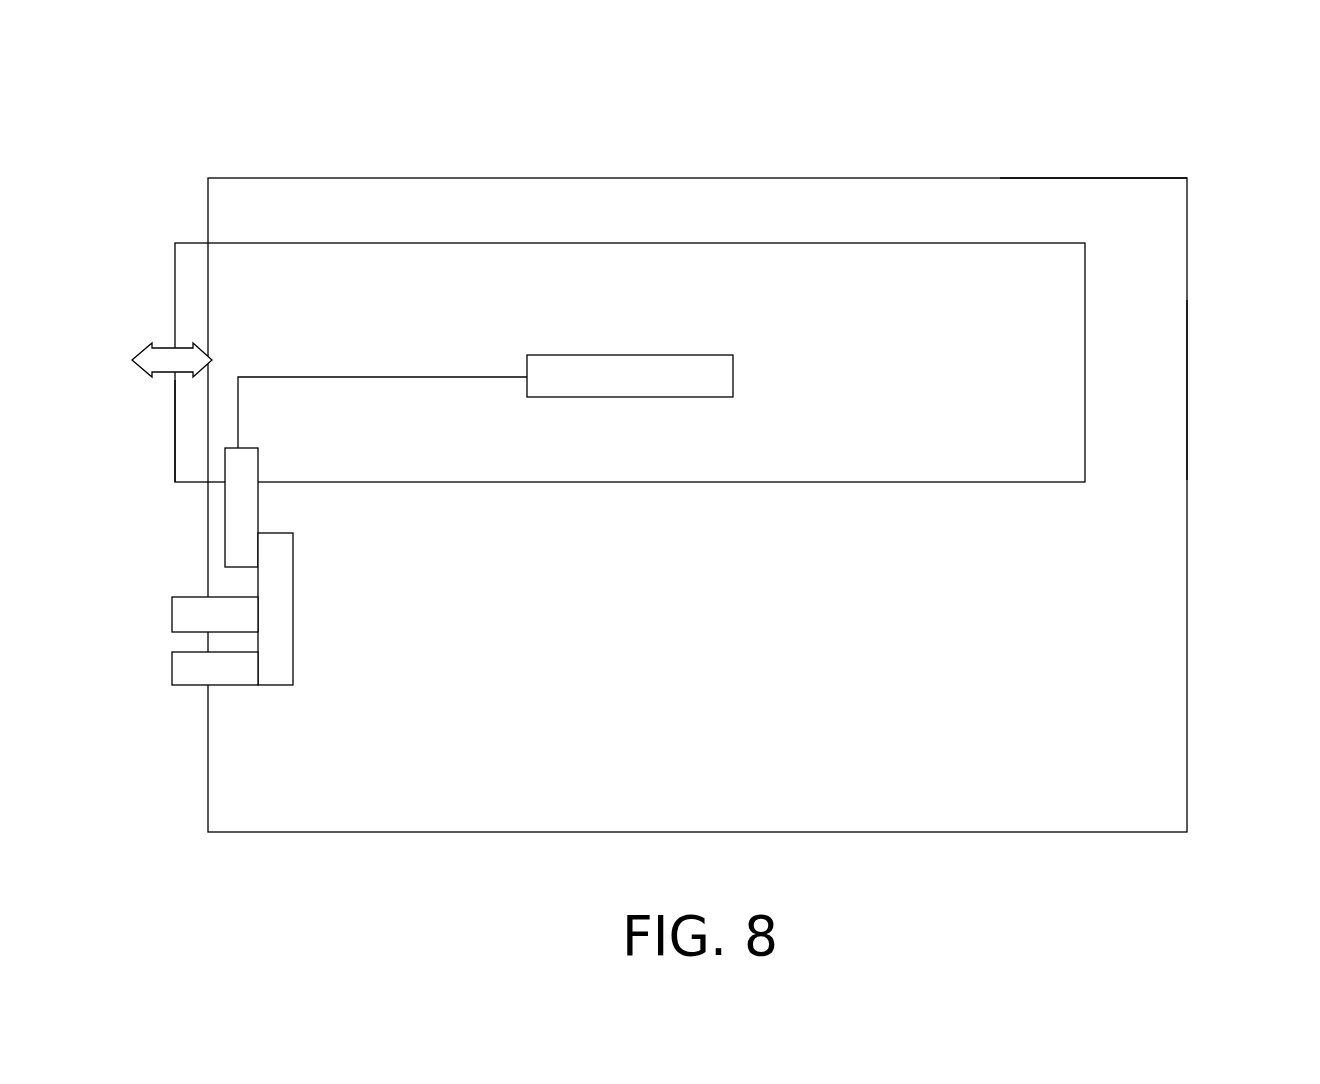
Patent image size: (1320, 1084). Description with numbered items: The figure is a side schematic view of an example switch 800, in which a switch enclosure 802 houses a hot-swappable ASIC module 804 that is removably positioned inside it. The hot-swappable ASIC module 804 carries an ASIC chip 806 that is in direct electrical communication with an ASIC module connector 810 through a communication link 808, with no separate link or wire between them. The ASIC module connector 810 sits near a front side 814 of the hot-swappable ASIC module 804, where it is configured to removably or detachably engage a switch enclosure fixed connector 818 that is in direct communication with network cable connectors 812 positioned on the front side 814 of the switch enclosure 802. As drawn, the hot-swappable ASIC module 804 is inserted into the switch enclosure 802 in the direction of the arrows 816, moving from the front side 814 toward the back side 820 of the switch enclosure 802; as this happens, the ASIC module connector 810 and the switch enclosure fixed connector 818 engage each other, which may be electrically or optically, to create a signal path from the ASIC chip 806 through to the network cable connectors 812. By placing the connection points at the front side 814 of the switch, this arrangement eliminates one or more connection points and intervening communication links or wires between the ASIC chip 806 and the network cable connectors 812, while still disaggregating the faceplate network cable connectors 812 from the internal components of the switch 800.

The switch 800 is at (1232, 106).
The switch enclosure 802 is at (1187, 268).
The hot-swappable ASIC module 804 is at (788, 482).
The ASIC chip 806 is at (635, 355).
The communication link 808 is at (362, 377).
The ASIC module connector 810 is at (230, 522).
The network cable connectors 812 is at (172, 616).
The front side 814 is at (192, 393).
The arrows 816 is at (160, 345).
The switch enclosure fixed connector 818 is at (297, 598).
The back side 820 is at (1187, 384).